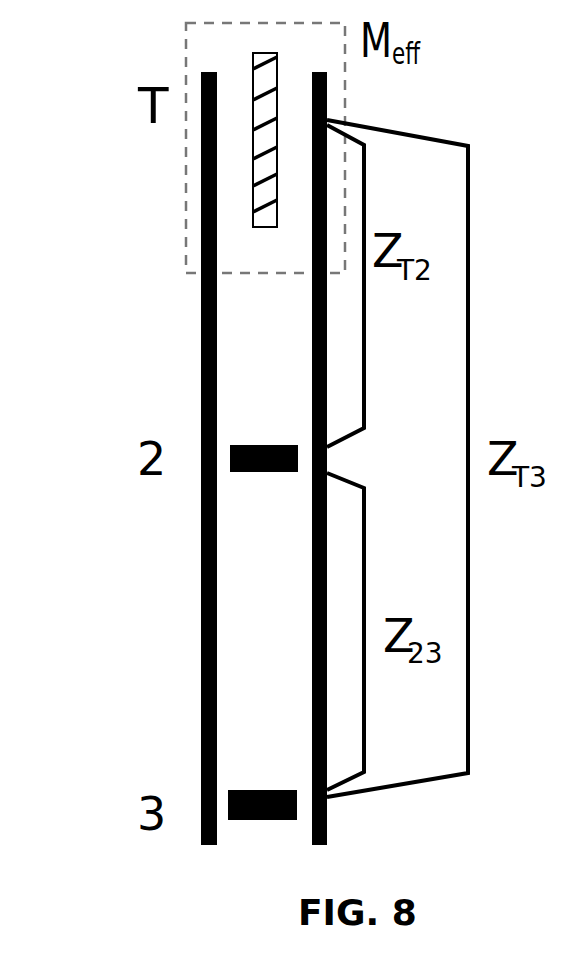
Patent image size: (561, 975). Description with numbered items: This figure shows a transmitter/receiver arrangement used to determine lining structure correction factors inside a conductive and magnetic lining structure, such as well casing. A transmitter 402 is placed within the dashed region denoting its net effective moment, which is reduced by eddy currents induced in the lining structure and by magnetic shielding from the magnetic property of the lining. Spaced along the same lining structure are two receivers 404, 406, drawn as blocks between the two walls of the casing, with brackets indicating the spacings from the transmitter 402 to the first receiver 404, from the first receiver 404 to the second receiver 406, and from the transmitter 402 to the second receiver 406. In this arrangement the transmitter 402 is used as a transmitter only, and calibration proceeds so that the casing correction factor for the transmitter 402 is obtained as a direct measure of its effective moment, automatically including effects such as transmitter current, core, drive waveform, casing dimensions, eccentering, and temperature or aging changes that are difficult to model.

The transmitter 402 is at (245, 178).
The receiver 404 is at (245, 473).
The receiver 406 is at (262, 790).